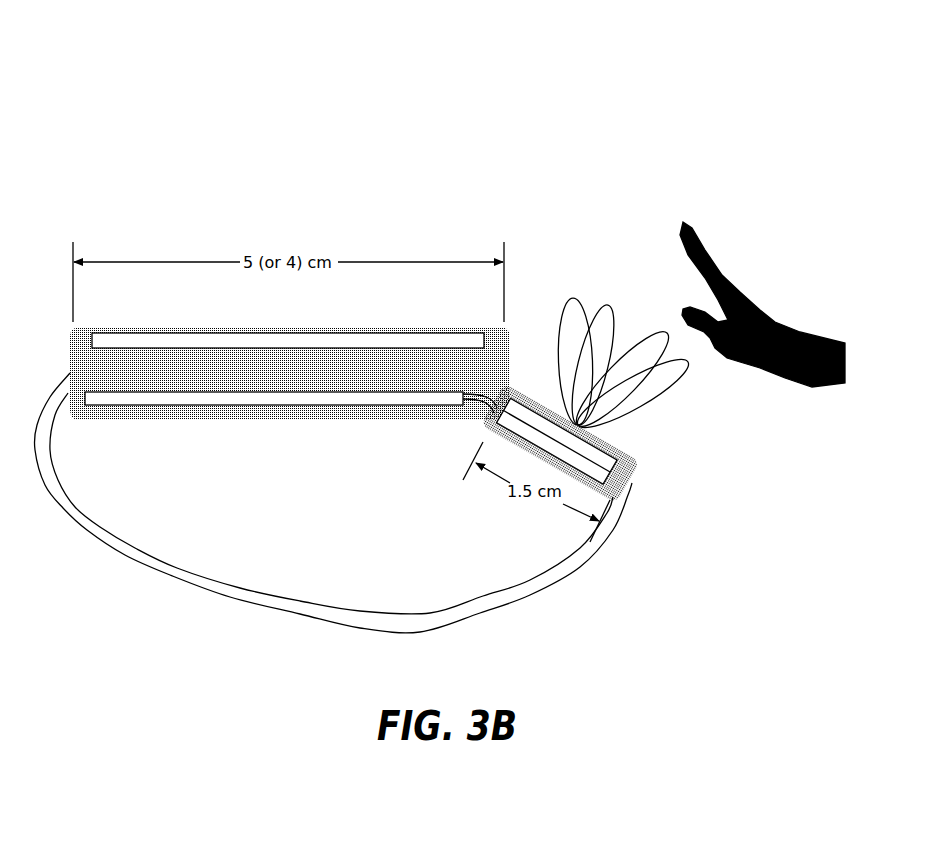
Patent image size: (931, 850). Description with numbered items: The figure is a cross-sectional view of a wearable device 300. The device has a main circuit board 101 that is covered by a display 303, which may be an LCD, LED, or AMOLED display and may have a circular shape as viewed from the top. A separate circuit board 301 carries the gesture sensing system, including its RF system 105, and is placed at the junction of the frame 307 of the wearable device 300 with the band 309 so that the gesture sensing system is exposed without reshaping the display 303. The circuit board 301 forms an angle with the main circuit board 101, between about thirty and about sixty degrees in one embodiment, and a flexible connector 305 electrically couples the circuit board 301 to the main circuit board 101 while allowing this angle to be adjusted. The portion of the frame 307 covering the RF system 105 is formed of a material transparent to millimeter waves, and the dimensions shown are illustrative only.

The wearable device 300 is at (549, 60).
The main circuit board 101 is at (207, 398).
The display 303 is at (178, 345).
The flexible connector 305 is at (487, 404).
The frame 307 is at (138, 420).
The band 309 is at (246, 605).
The RF system 105 is at (604, 459).
The circuit board 301 is at (604, 476).